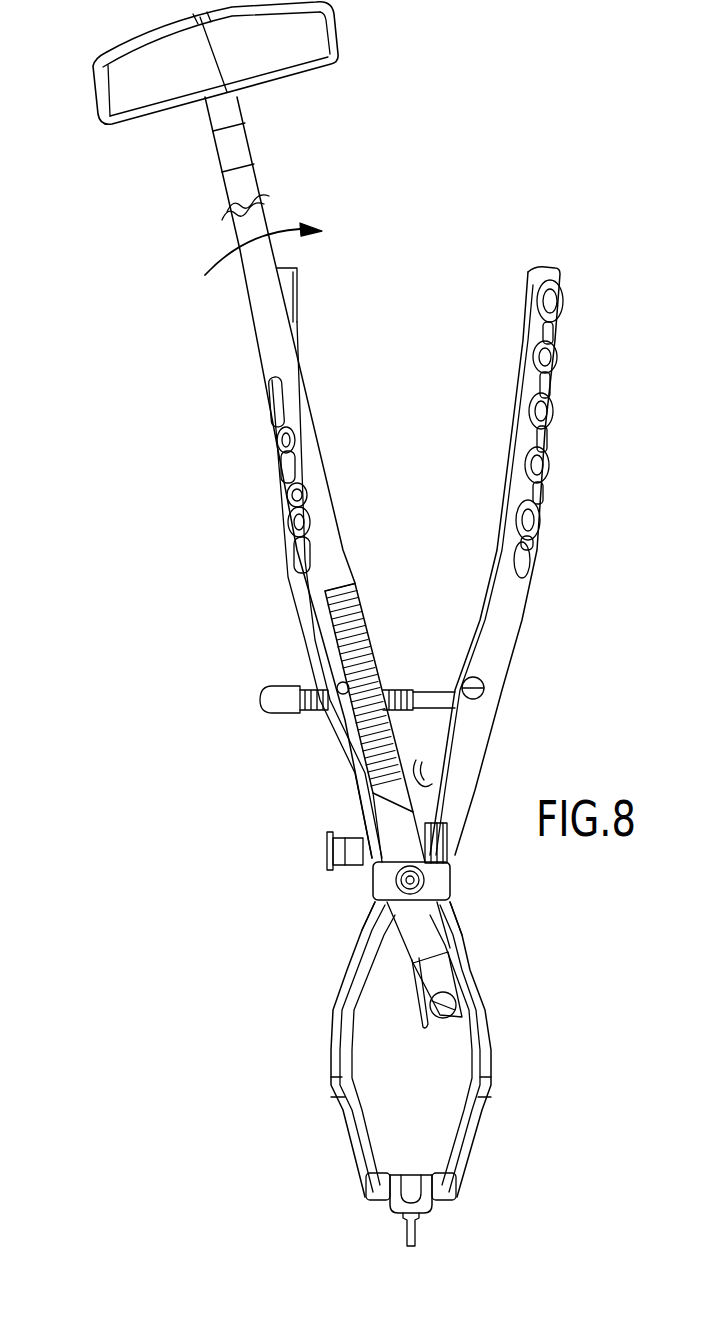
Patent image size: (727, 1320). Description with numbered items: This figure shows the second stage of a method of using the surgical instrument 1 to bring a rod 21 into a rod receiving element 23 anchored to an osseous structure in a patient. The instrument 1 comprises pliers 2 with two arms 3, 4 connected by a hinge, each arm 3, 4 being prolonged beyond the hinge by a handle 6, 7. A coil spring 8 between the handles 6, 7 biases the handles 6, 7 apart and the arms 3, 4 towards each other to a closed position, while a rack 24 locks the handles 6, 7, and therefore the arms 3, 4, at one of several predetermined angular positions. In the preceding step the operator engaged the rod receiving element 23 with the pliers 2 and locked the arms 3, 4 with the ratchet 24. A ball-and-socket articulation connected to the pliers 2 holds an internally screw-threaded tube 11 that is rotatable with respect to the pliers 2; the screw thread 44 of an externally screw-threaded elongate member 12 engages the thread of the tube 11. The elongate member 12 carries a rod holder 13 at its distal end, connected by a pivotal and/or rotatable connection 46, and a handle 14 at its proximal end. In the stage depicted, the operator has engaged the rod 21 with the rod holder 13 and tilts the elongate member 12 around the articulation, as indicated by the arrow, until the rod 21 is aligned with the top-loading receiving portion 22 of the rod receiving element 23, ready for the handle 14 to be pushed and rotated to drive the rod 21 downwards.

The surgical instrument 1 is at (587, 234).
The pliers 2 is at (338, 939).
The arm 3 is at (468, 1108).
The arm 4 is at (340, 1100).
The handle 6 is at (283, 495).
The handle 7 is at (554, 405).
The coil spring 8 is at (413, 772).
The internally screw-threaded tube 11 is at (385, 822).
The externally screw-threaded elongate member 12 is at (317, 462).
The rod holder 13 is at (430, 985).
The handle 14 is at (117, 88).
The rod 21 is at (450, 1018).
The top-loading receiving portion 22 is at (410, 1183).
The rod receiving element 23 is at (420, 1226).
The rack 24 is at (405, 690).
The screw thread 44 is at (357, 607).
The pivotal and/or rotatable connection 46 is at (436, 967).